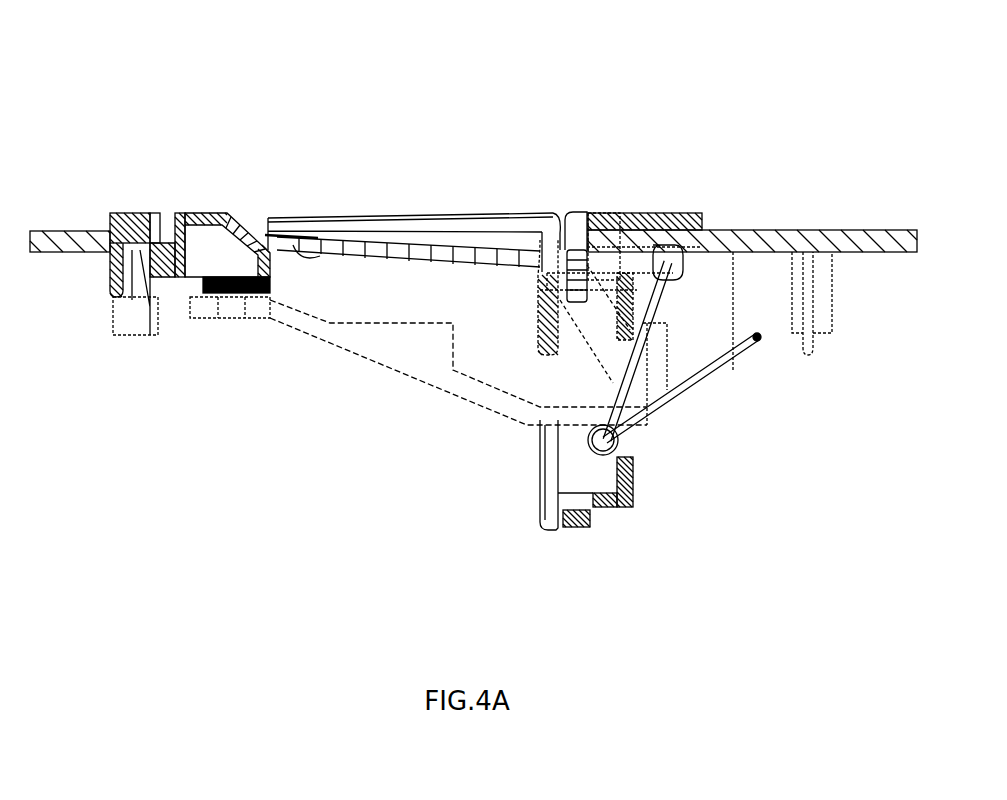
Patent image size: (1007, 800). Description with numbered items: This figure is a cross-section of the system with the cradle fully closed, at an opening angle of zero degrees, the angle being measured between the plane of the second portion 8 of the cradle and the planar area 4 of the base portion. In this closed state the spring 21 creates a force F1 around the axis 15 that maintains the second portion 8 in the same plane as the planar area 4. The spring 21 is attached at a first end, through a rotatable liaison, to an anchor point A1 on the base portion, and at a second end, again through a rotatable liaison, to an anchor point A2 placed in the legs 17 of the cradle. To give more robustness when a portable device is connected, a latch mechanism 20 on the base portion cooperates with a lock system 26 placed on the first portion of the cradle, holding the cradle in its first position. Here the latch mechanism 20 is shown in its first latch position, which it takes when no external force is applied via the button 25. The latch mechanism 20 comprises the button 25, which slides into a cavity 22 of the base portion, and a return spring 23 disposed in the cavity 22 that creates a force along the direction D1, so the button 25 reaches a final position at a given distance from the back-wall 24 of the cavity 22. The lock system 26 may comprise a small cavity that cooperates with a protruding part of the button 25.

The planar area 4 is at (620, 212).
The second portion 8 is at (410, 213).
The axis 15 is at (557, 212).
The legs 17 is at (640, 220).
The latch mechanism 20 is at (246, 196).
The spring 21 is at (690, 392).
The cavity 22 is at (158, 213).
The return spring 23 is at (155, 335).
The back-wall 24 is at (118, 213).
The button 25 is at (207, 213).
The lock system 26 is at (593, 515).
The anchor point A1 is at (760, 338).
The anchor point A2 is at (690, 213).
The force F1 is at (663, 252).
The direction D1 is at (283, 280).